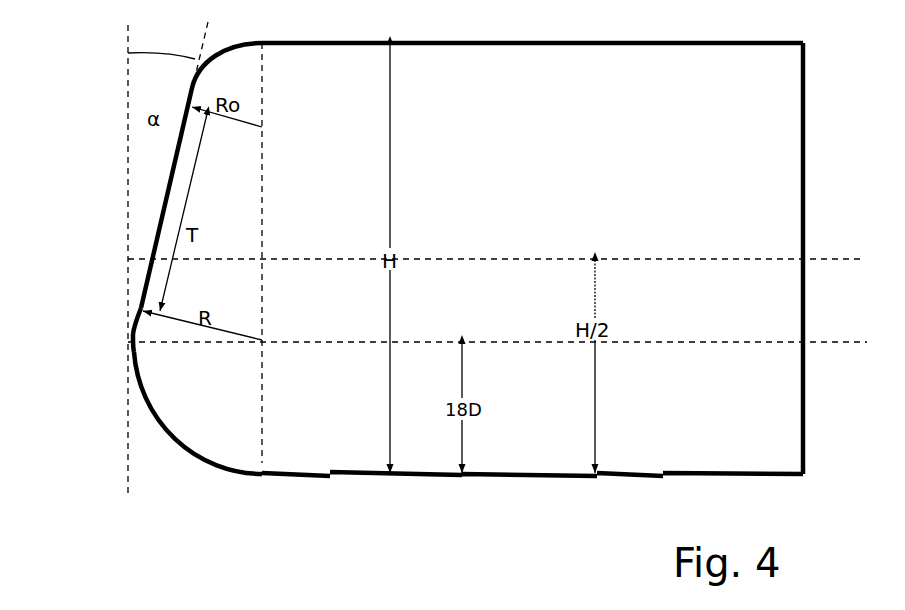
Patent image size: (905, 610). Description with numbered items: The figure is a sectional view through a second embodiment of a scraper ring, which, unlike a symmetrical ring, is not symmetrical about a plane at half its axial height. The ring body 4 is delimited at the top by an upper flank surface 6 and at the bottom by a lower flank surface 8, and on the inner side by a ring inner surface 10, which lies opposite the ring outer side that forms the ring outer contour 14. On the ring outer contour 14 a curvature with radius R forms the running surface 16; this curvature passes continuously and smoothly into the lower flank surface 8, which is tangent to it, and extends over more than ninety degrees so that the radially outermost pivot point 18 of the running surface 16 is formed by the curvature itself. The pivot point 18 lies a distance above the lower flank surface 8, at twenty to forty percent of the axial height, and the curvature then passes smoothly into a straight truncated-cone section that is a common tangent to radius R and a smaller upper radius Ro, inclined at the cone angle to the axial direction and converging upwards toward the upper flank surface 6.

The ring body 4 is at (430, 263).
The upper flank surface 6 is at (532, 30).
The lower flank surface 8 is at (532, 491).
The ring inner surface 10 is at (820, 258).
The ring outer contour 14 is at (158, 210).
The running surface 16 is at (62, 302).
The pivot point 18 is at (128, 342).